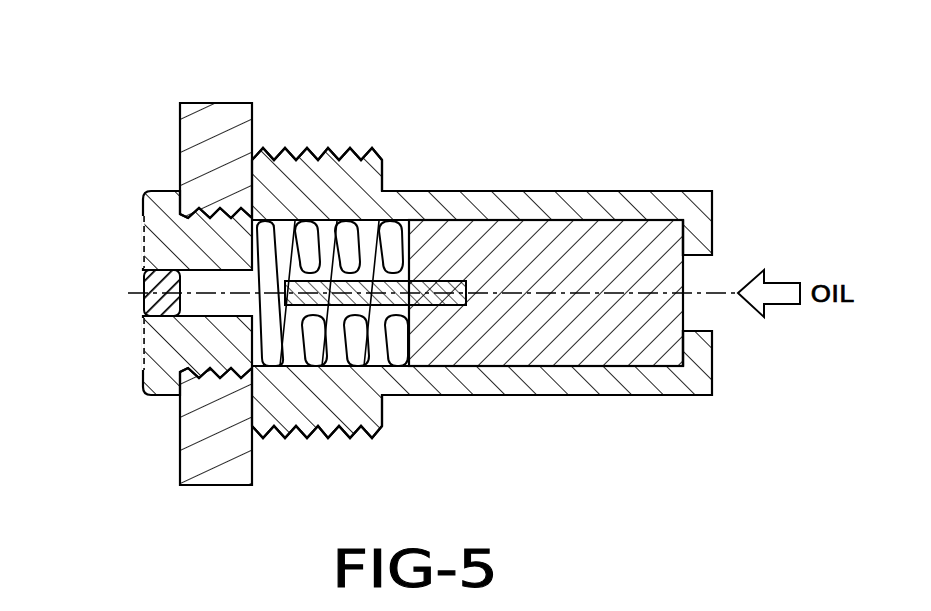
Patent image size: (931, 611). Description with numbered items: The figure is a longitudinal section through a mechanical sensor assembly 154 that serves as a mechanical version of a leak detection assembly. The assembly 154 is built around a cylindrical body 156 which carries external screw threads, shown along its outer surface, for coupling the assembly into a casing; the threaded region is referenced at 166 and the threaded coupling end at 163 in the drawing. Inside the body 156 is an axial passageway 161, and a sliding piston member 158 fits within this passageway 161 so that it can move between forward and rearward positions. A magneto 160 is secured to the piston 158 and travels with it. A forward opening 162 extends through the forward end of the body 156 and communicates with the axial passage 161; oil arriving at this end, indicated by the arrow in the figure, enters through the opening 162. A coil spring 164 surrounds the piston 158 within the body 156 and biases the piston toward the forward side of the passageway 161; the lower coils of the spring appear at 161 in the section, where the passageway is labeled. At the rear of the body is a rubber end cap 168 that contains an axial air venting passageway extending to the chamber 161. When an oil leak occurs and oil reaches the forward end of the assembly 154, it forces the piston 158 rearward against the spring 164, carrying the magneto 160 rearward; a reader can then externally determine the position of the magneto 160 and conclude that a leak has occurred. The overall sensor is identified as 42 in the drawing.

The check valve assembly 42 is at (546, 126).
The mechanical sensor assembly 154 is at (546, 404).
The cylindrical body 156 is at (638, 397).
The sliding piston member 158 is at (625, 252).
The magneto 160 is at (454, 285).
The axial passageway 161 is at (332, 370).
The forward opening 162 is at (716, 272).
The passage with nut 163 is at (217, 270).
The coil spring 164 is at (307, 240).
The threaded portion 166 is at (352, 183).
The rubber end cap 168 is at (128, 311).